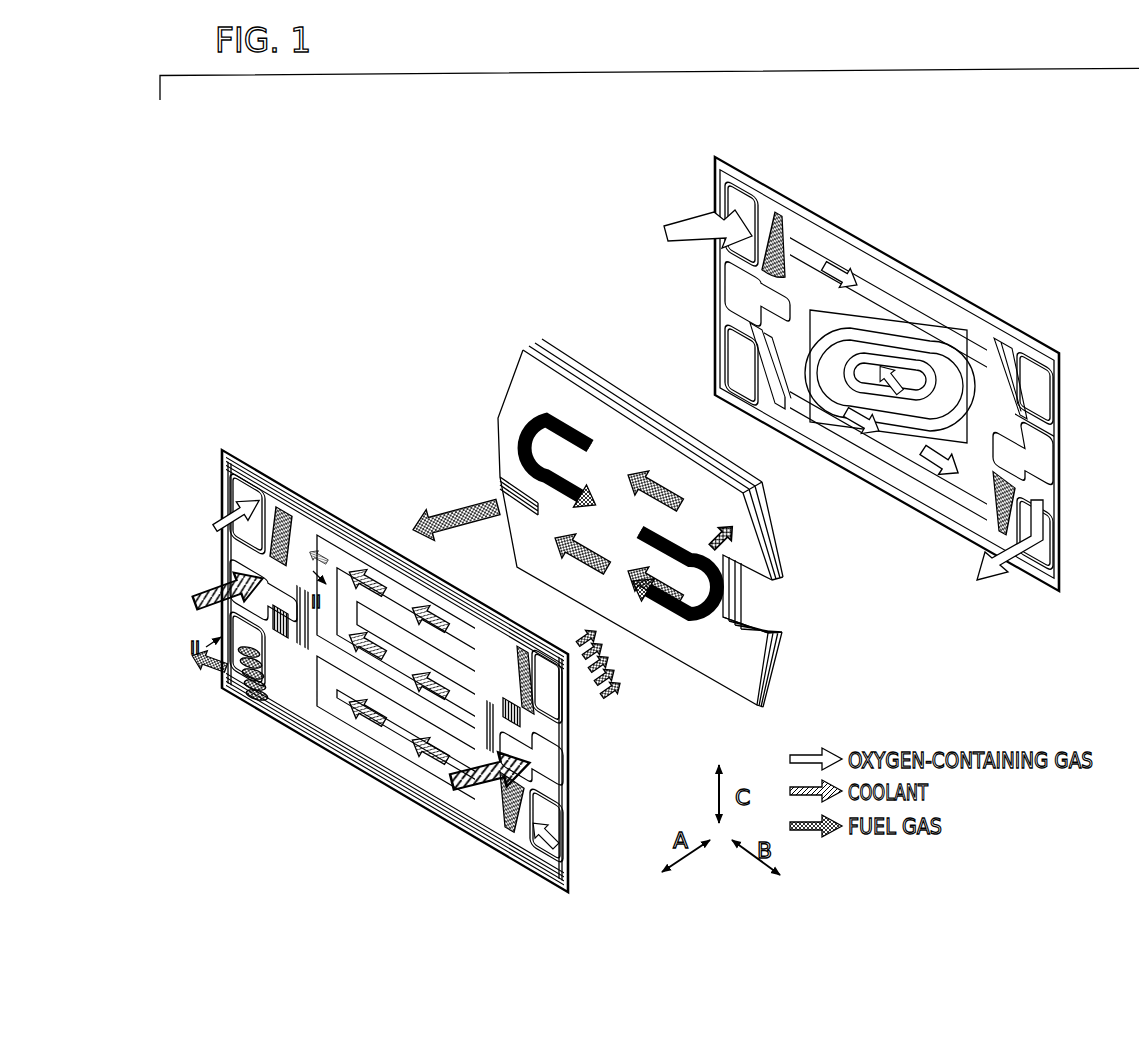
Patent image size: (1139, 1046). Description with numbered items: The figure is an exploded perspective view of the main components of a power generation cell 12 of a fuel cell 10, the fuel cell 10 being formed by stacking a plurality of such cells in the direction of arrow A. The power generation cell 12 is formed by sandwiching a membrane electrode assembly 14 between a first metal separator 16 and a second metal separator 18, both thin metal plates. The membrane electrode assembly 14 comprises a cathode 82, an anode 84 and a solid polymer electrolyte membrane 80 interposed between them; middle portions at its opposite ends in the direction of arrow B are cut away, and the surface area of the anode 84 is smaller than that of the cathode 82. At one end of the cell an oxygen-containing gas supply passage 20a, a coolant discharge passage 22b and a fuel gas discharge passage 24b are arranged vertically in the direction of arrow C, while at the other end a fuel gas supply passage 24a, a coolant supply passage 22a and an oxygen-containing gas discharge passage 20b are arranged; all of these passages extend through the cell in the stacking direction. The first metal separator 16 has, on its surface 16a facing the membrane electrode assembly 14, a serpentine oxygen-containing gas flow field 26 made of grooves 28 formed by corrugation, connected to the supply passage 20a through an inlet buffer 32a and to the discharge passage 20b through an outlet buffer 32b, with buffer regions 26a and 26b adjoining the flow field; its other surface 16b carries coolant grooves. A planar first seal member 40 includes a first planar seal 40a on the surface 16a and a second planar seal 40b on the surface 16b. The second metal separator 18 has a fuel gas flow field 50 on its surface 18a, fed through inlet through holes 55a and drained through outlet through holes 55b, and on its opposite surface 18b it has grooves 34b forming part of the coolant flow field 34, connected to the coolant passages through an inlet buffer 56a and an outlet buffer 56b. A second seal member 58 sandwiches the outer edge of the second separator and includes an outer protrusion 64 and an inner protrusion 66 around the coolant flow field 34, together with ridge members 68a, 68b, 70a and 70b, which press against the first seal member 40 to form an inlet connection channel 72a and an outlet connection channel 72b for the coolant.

The fuel cell 10 is at (451, 249).
The power generation cell 12 is at (413, 249).
The membrane electrode assembly 14 is at (621, 506).
The first metal separator 16 is at (715, 153).
The surface of first metal separator 16a is at (848, 467).
The other surface of first metal separator 16b is at (890, 505).
The second metal separator 18 is at (221, 448).
The surface of second metal separator 18a is at (380, 783).
The surface of second metal separator 18b is at (345, 766).
The oxygen-containing gas supply passage 20a is at (738, 206).
The oxygen-containing gas discharge passage 20b is at (1050, 525).
The coolant supply passage 22a is at (1043, 467).
The coolant discharge passage 22b is at (738, 285).
The fuel gas supply passage 24a is at (1040, 410).
The fuel gas discharge passage 24b is at (733, 382).
The oxygen-containing gas flow field 26 is at (955, 337).
The inlet buffer 26a is at (1000, 432).
The outlet buffer 26b is at (805, 337).
The grooves 28 is at (917, 310).
The inlet buffer 32a is at (784, 222).
The outlet buffer 32b is at (1010, 497).
The coolant flow field 34 is at (332, 693).
The grooves 34b is at (400, 600).
The first seal member 40 is at (891, 263).
The first planar seal 40a is at (1020, 343).
The second planar seal 40b is at (1051, 356).
The fuel gas flow field 50 is at (471, 635).
The inlet through holes 55a is at (520, 648).
The outlet through holes 55b is at (290, 718).
The inlet buffer 56a is at (493, 847).
The outlet buffer 56b is at (280, 510).
The second seal member 58 is at (341, 527).
The outer protrusion 64 is at (495, 718).
The inner protrusion 66 is at (480, 833).
The ridge members 68a is at (553, 755).
The ridge members 68b is at (296, 570).
The ridge members 70a is at (547, 733).
The ridge members 70b is at (355, 690).
The inlet connection channel 72a is at (437, 770).
The outlet connection channel 72b is at (245, 590).
The solid polymer electrolyte membrane 80 is at (780, 632).
The cathode 82 is at (742, 595).
The anode 84 is at (735, 661).